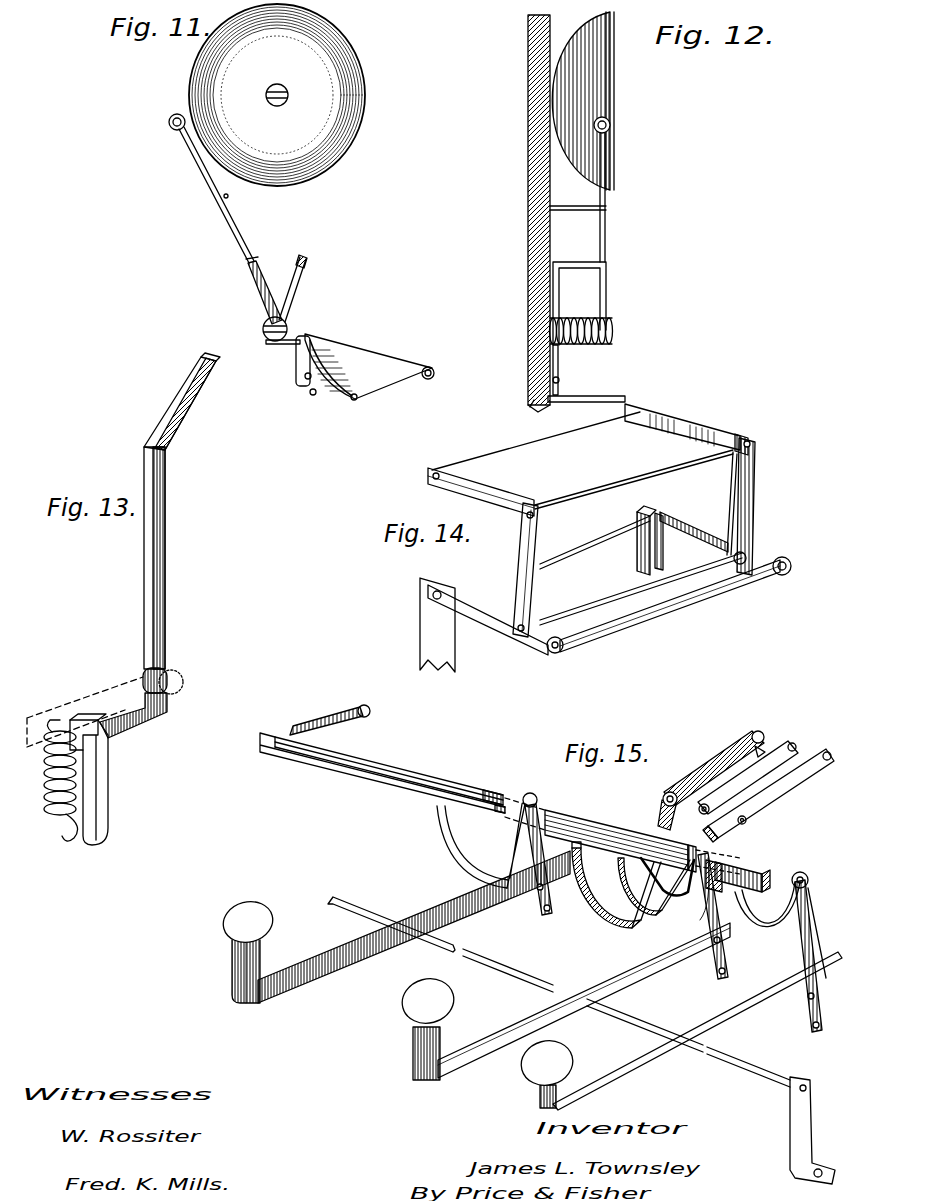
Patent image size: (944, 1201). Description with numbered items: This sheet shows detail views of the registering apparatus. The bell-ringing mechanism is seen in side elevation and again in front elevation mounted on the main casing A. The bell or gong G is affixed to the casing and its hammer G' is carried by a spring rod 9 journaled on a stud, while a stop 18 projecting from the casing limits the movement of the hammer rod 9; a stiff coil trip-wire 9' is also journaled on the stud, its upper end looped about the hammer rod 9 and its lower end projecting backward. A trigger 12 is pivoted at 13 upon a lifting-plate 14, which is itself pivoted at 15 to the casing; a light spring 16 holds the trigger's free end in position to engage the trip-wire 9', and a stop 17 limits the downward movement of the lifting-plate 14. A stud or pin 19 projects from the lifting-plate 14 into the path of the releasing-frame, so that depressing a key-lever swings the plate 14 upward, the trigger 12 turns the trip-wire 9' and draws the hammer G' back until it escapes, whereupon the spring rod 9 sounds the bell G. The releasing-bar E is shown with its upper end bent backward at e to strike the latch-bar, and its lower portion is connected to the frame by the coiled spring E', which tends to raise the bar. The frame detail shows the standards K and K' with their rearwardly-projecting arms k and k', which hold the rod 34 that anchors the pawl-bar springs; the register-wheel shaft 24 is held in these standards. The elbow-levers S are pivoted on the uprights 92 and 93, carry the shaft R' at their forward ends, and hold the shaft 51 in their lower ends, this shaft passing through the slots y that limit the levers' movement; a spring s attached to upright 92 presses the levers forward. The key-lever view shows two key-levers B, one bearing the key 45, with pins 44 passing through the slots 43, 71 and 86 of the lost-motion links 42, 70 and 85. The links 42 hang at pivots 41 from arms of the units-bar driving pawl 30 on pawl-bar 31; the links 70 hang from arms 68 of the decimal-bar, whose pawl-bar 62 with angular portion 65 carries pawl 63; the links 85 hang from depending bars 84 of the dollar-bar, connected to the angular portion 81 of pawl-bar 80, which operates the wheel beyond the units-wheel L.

In FIG. 11, the bell or gong G is at (277, 95).
In FIG. 12, the bell or gong G is at (583, 101).
In FIG. 12, the hammer G' is at (618, 120).
In FIG. 11, the crank knob G'' is at (159, 129).
In FIG. 11, the connecting rod 9 is at (210, 195).
In FIG. 12, the connecting rod 9 is at (615, 197).
In FIG. 11, the stop 18 is at (228, 197).
In FIG. 12, the stop 18 is at (575, 211).
In FIG. 11, the pivot / coil 9' is at (275, 346).
In FIG. 12, the pivot / coil 9' is at (595, 303).
In FIG. 11, the trigger 12 is at (294, 361).
In FIG. 12, the trigger 12 is at (560, 360).
In FIG. 11, the pivot 13 is at (305, 383).
In FIG. 12, the pivot 13 is at (560, 379).
In FIG. 11, the lifting-plate 14 is at (368, 366).
In FIG. 11, the pivot 15 is at (435, 372).
In FIG. 15, the pivot 15 is at (547, 1071).
In FIG. 11, the light spring 16 is at (322, 365).
In FIG. 11, the stop 17 is at (313, 396).
In FIG. 12, the stop 17 is at (531, 407).
In FIG. 11, the stud or pin 19 is at (354, 401).
In FIG. 12, the stud or pin 19 is at (580, 402).
In FIG. 12, the main casing A is at (528, 135).
In FIG. 13, the backwardly-bent upper end e is at (200, 391).
In FIG. 13, the releasing-bar E is at (110, 597).
In FIG. 13, the coiled spring E' is at (50, 780).
In FIG. 14, the elbow-levers S is at (492, 500).
In FIG. 14, the shaft R' is at (582, 460).
In FIG. 14, the upright 92 is at (540, 540).
In FIG. 14, the upright 93 is at (755, 512).
In FIG. 14, the spring s is at (730, 503).
In FIG. 14, the shaft 24 is at (580, 536).
In FIG. 14, the standard K' is at (632, 540).
In FIG. 14, the rearwardly-projecting arm k' is at (691, 541).
In FIG. 14, the shaft 51 is at (560, 608).
In FIG. 14, the rod 34 is at (656, 626).
In FIG. 14, the rearwardly-projecting arm k is at (488, 622).
In FIG. 14, the standard K is at (437, 625).
In FIG. 14, the slot y is at (540, 650).
In FIG. 15, the units-wheel L is at (598, 825).
In FIG. 15, the depending bars 84 is at (470, 860).
In FIG. 15, the links or lost-motion connections 85 is at (545, 912).
In FIG. 15, the pins 44 is at (537, 888).
In FIG. 15, the pawl-bar 80 is at (709, 768).
In FIG. 15, the pawl 63 is at (764, 748).
In FIG. 15, the pawl bar or lever 62 is at (748, 777).
In FIG. 15, the pawl 30 is at (800, 783).
In FIG. 15, the pawl bar or lever 31 is at (766, 803).
In FIG. 15, the angular portion 81 is at (666, 816).
In FIG. 15, the outer portion 65 is at (702, 830).
In FIG. 15, the lost-motion links or connections 42 is at (742, 866).
In FIG. 15, the arms 68 is at (780, 950).
In FIG. 15, the links or lost-motion connections 70 is at (700, 905).
In FIG. 15, the pivot 41 is at (809, 882).
In FIG. 15, the slots 71 is at (705, 965).
In FIG. 15, the slots 43 is at (727, 980).
In FIG. 15, the slots 86 is at (582, 906).
In FIG. 15, the key-levers B is at (355, 975).
In FIG. 15, the key 45 is at (428, 1026).